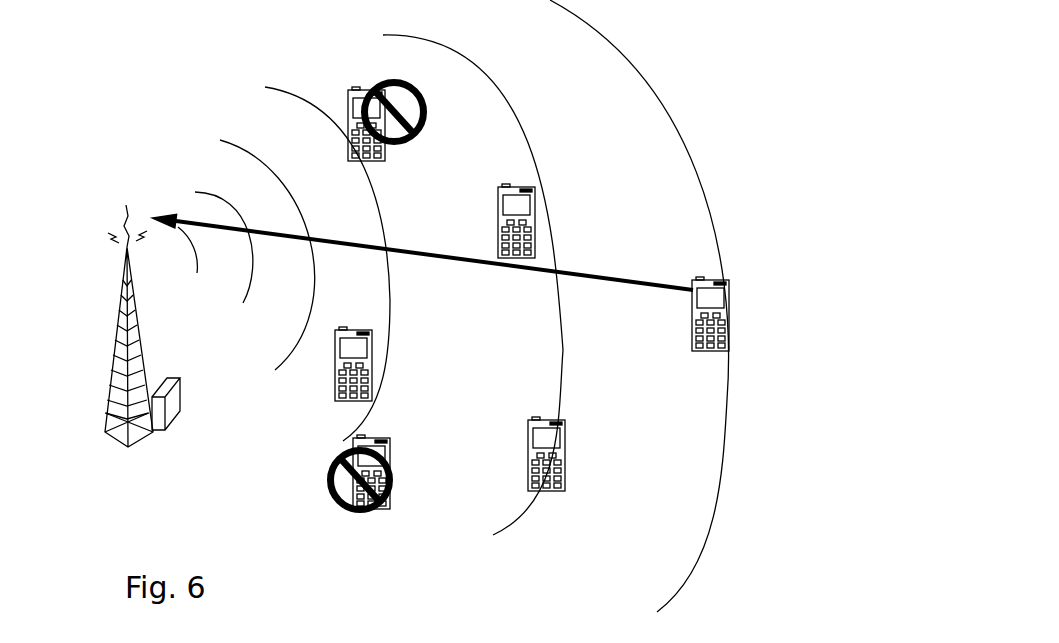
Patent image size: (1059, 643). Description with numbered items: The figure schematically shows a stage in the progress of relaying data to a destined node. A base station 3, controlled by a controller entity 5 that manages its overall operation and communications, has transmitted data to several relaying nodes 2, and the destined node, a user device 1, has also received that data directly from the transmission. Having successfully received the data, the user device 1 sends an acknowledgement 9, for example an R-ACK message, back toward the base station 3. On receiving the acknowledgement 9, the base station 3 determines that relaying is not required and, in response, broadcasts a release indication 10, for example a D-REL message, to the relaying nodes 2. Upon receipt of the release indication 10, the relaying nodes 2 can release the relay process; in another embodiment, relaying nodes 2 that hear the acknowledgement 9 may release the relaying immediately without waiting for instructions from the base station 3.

The user device 1 is at (440, 315).
The relaying nodes 2 is at (453, 315).
The base station 3 is at (128, 447).
The controller entity 5 is at (172, 413).
The acknowledgement 9 is at (192, 224).
The release indication 10 is at (252, 75).